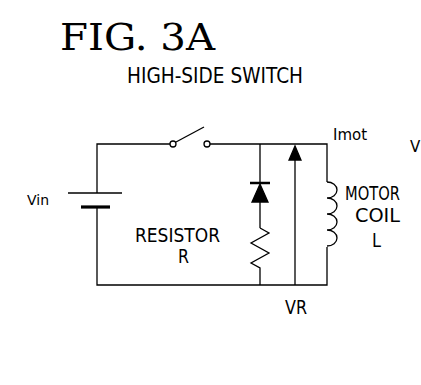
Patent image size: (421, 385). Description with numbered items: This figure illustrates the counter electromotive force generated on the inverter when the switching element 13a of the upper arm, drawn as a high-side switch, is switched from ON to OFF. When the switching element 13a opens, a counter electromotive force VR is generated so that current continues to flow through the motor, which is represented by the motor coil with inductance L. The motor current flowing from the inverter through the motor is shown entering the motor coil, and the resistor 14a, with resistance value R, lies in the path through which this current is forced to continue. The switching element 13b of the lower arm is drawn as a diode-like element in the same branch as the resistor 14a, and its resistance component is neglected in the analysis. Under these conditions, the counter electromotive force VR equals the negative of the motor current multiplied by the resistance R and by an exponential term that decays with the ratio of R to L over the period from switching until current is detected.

The switching element of the upper arm 13a is at (181, 135).
The switching element of the lower arm 13b is at (268, 181).
The resistor 14a is at (250, 269).